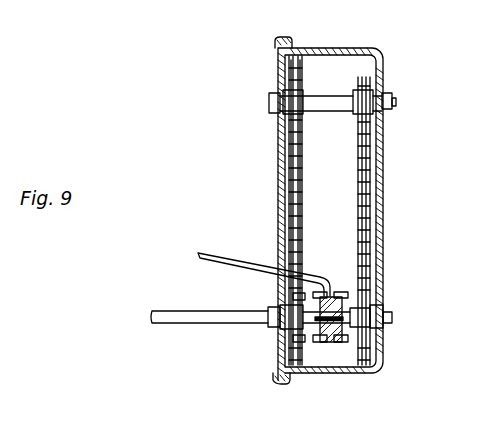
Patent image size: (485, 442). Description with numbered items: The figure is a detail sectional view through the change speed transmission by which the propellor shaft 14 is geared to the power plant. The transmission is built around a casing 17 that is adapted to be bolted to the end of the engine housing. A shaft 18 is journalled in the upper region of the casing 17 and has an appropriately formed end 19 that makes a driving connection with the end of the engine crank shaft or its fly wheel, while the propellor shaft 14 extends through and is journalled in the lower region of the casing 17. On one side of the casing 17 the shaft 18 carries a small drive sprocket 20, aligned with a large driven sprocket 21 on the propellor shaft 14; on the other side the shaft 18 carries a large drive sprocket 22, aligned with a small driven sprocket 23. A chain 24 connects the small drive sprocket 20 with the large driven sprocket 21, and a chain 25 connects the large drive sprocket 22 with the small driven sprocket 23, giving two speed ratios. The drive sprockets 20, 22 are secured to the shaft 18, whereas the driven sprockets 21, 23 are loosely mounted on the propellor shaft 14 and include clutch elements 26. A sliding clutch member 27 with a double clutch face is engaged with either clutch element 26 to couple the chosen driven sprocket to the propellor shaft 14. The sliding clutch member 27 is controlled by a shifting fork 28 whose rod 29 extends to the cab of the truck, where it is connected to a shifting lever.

The propellor shaft 14 is at (150, 316).
The casing 17 is at (380, 193).
The shaft 18 is at (318, 100).
The end 19 is at (394, 101).
The small drive sprocket 20 is at (365, 77).
The large driven sprocket 21 is at (377, 352).
The large drive sprocket 22 is at (297, 62).
The small driven sprocket 23 is at (291, 345).
The chain 24 is at (367, 233).
The chain 25 is at (303, 190).
The clutch elements 26 is at (304, 346).
The sliding clutch member 27 is at (316, 345).
The shifting fork 28 is at (331, 292).
The rod 29 is at (221, 256).